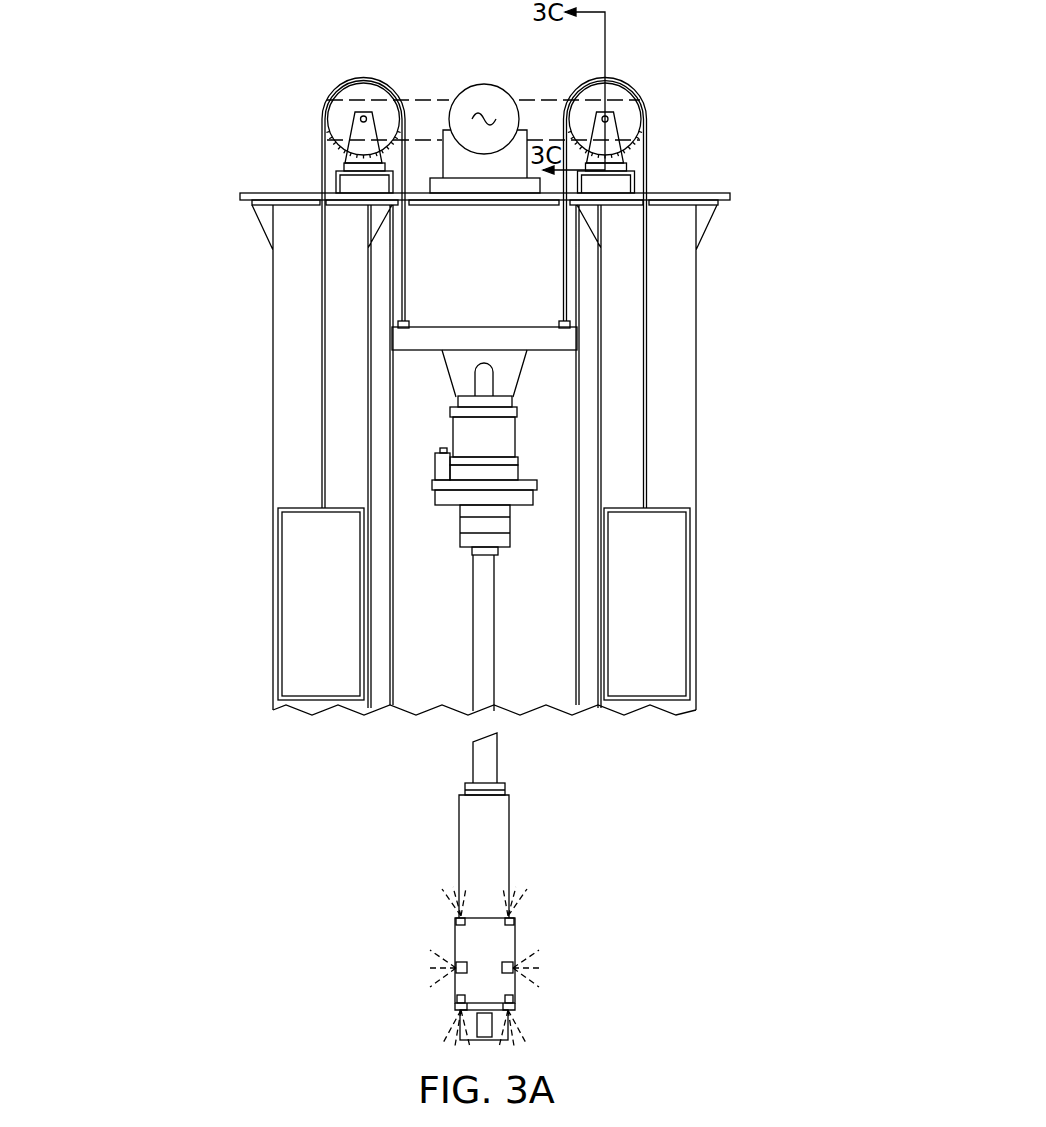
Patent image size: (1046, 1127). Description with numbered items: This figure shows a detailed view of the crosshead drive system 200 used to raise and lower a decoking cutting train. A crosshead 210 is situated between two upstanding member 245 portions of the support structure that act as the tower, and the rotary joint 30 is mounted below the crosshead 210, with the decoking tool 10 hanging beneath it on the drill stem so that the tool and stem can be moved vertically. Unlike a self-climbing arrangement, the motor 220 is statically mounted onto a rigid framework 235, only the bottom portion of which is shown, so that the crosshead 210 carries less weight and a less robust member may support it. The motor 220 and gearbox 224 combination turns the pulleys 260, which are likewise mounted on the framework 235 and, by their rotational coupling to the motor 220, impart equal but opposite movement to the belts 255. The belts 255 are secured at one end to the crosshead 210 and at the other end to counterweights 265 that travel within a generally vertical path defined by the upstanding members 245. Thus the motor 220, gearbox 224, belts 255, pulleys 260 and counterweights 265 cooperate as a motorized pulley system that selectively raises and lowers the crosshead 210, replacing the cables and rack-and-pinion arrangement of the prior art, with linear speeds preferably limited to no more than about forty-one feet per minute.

The decoking tool 10 is at (528, 890).
The rotary joint 30 is at (502, 523).
The crosshead drive system 200 is at (181, 109).
The crosshead 210 is at (442, 332).
The motor 220 is at (507, 84).
The gearbox 224 is at (427, 110).
The framework 235 is at (703, 192).
The upstanding member 245 is at (272, 280).
The belts 255 is at (322, 397).
The pulleys 260 is at (338, 113).
The counterweights 265 is at (298, 563).